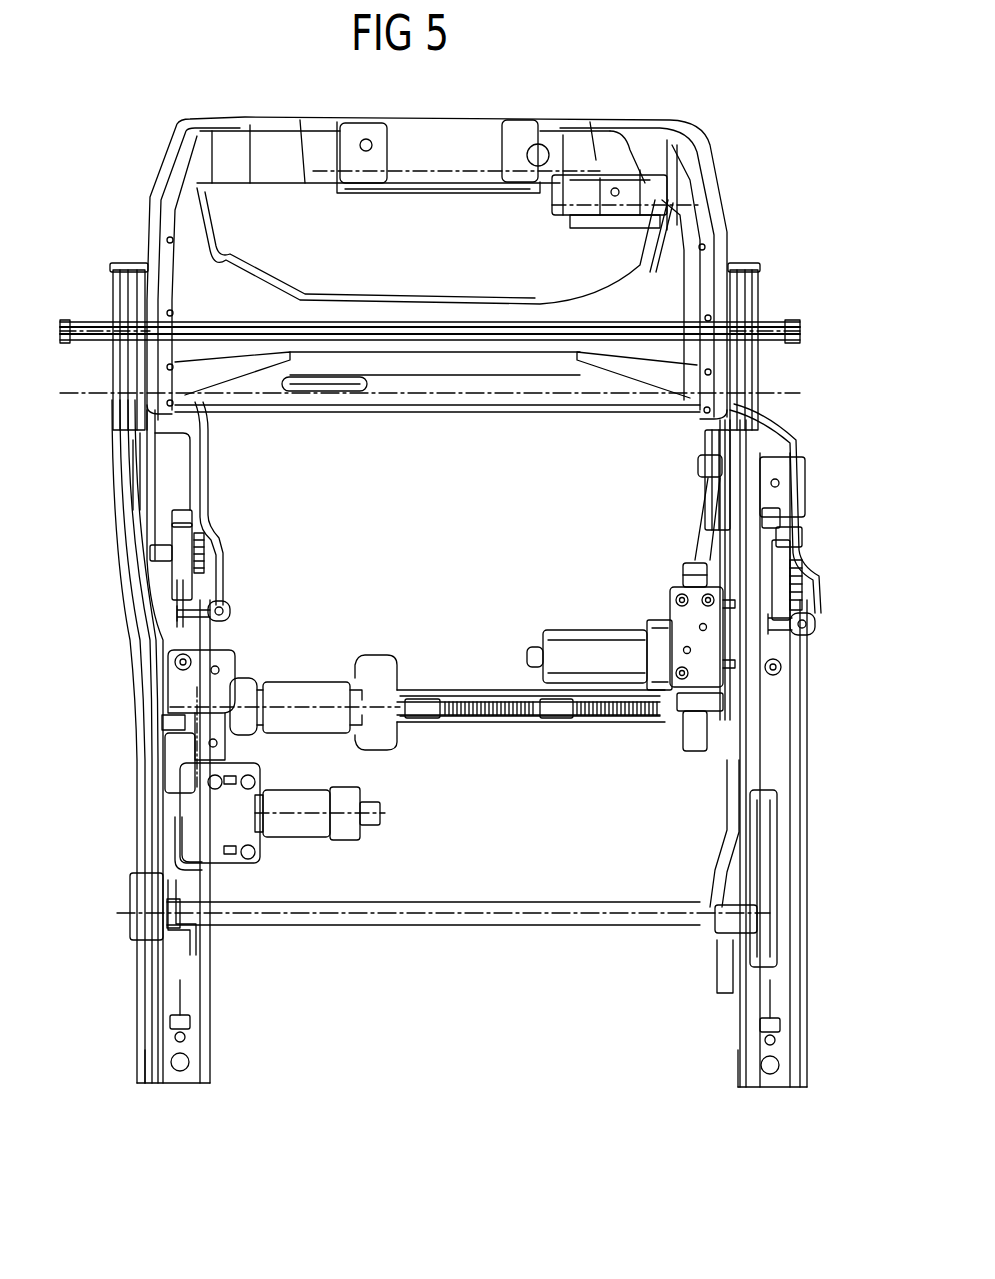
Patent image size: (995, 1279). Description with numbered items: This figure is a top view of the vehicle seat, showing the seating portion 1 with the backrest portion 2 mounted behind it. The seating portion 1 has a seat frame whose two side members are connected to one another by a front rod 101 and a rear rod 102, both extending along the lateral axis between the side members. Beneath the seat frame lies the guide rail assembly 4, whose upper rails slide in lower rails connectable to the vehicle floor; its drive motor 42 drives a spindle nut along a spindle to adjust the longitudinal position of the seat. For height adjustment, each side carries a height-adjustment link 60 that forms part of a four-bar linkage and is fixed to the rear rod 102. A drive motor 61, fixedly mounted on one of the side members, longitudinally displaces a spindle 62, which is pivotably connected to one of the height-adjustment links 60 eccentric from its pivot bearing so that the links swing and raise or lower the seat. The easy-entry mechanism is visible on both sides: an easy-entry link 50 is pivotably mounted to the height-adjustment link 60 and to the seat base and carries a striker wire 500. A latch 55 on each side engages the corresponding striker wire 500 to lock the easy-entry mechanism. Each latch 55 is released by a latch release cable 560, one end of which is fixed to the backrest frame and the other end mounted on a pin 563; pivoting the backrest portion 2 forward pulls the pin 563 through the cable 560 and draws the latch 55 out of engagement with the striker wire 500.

The seating portion 1 is at (123, 693).
The backrest portion 2 is at (732, 180).
The guide rail assembly 4 is at (146, 1061).
The drive motor 42 is at (310, 690).
The easy-entry link 50 is at (163, 553).
The latch 55 is at (180, 535).
The height-adjustment link 60 is at (155, 455).
The drive motor 61 is at (578, 648).
The spindle 62 is at (687, 580).
The front rod 101 is at (447, 925).
The rear rod 102 is at (442, 405).
The striker wire 500 is at (192, 532).
The latch release cable 560 is at (205, 437).
The pin 563 is at (210, 612).